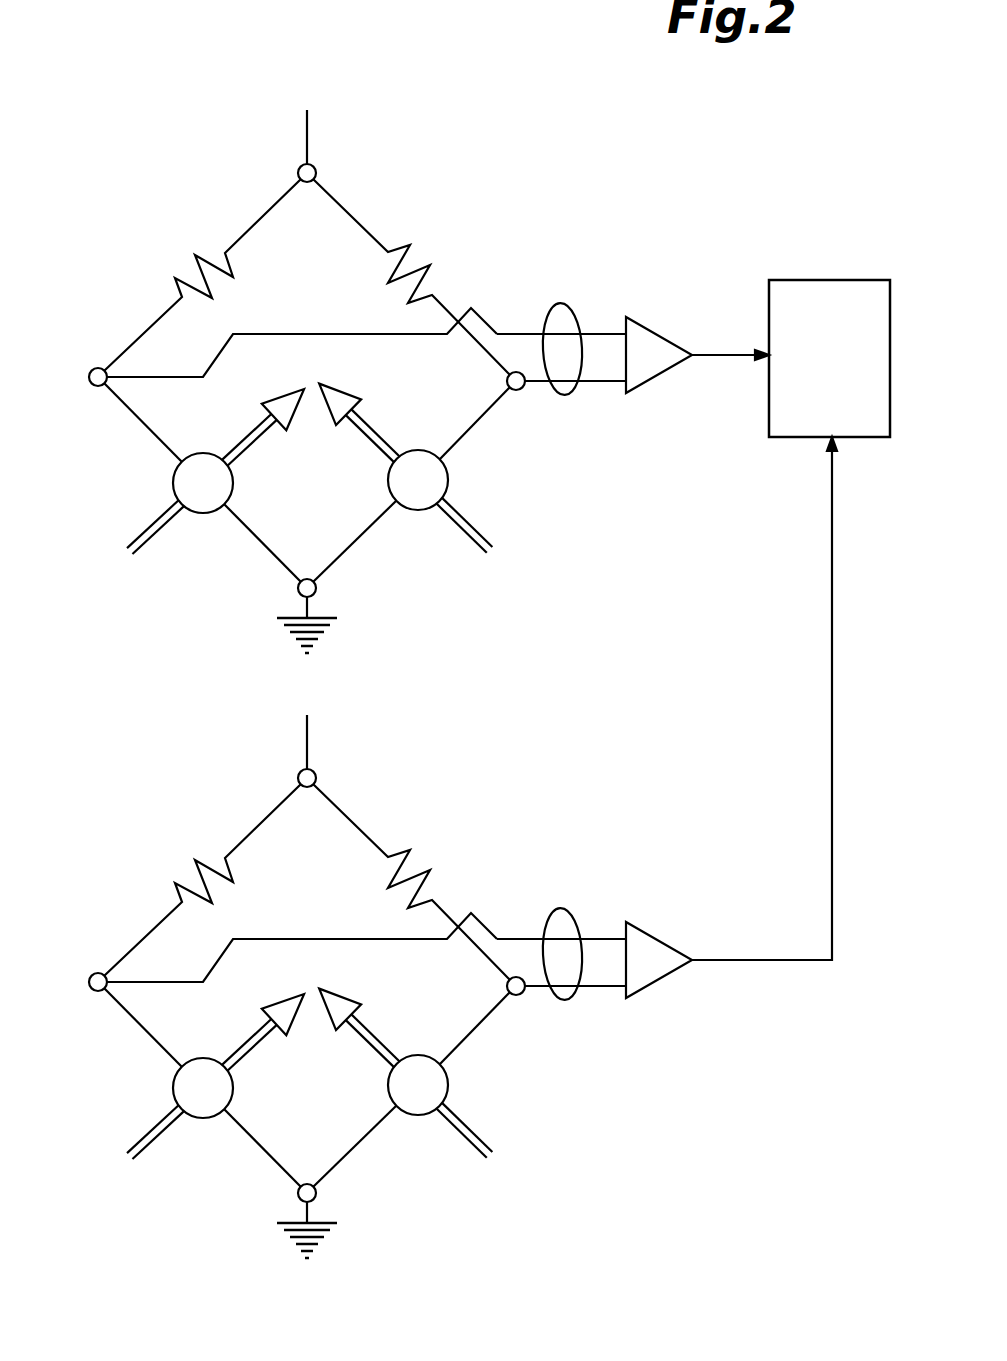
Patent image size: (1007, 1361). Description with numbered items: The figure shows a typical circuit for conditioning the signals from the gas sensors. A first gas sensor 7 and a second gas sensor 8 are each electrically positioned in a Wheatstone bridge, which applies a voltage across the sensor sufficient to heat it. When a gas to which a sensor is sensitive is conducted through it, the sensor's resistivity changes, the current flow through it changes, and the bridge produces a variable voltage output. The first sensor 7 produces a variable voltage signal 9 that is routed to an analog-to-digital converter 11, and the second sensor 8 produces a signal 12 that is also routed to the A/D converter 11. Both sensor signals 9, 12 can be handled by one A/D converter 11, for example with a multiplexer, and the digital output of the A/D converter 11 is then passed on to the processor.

The first gas sensor 7 is at (448, 485).
The second gas sensor 8 is at (438, 1072).
The variable voltage signal 9 is at (727, 353).
The A/D converter 11 is at (815, 280).
The signal 12 is at (832, 688).